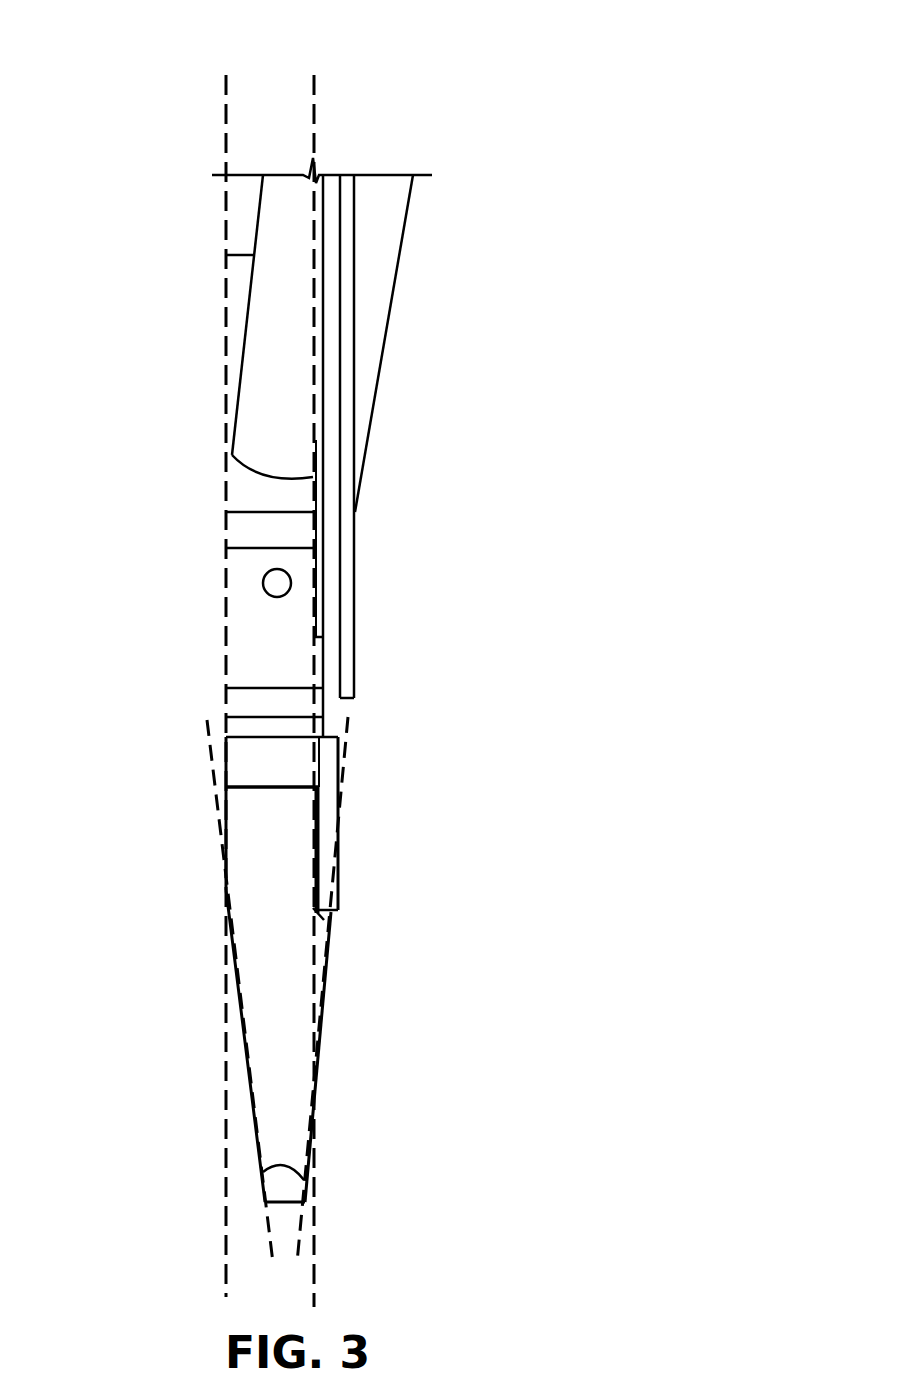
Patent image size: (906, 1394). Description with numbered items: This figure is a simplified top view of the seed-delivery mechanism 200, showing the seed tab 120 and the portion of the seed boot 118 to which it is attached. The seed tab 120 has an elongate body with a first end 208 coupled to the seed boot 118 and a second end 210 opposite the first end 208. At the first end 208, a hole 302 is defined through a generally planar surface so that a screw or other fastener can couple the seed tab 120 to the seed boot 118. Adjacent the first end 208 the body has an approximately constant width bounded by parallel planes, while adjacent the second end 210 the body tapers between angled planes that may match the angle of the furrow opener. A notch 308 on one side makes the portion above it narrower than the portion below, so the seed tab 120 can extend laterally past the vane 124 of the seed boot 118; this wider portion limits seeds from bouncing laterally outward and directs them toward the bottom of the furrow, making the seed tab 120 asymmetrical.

The seed-delivery mechanism 200 is at (424, 95).
The seed boot 118 is at (382, 295).
The first end 208 is at (243, 570).
The hole 302 is at (277, 597).
The vane 124 is at (338, 888).
The notch 308 is at (332, 918).
The seed tab 120 is at (257, 947).
The second end 210 is at (265, 1147).